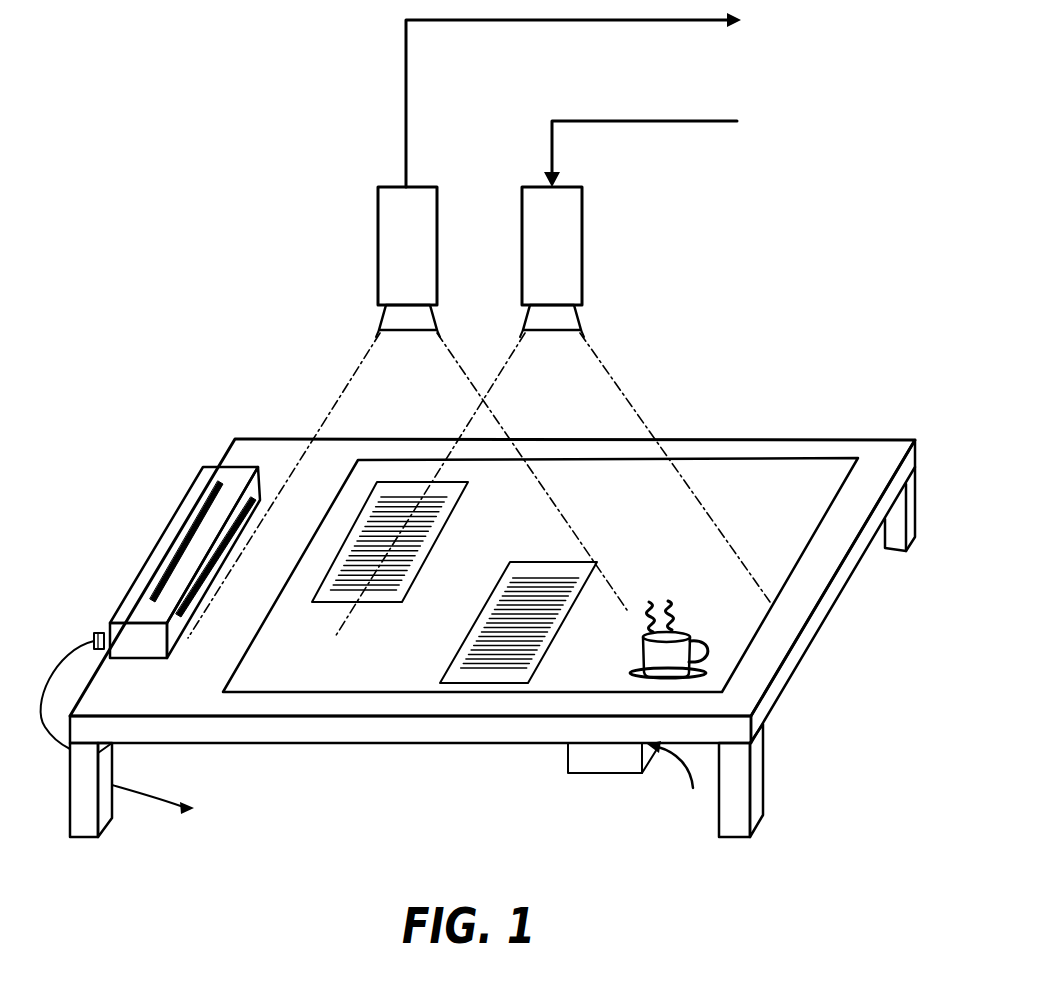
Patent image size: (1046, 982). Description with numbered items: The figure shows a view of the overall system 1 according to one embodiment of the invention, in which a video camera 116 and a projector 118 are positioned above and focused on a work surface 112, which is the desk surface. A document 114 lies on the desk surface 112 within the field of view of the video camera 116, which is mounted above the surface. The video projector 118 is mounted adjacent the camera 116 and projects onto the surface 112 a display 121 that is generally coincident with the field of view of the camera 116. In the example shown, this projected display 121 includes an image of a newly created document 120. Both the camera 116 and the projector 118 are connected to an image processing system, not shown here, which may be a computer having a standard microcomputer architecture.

The interactive desktop system 1 is at (280, 393).
The work surface 112 is at (774, 654).
The document 114 is at (450, 508).
The video camera 116 is at (378, 237).
The video projector 118 is at (582, 230).
The newly created document 120 is at (467, 639).
The display 121 is at (797, 458).